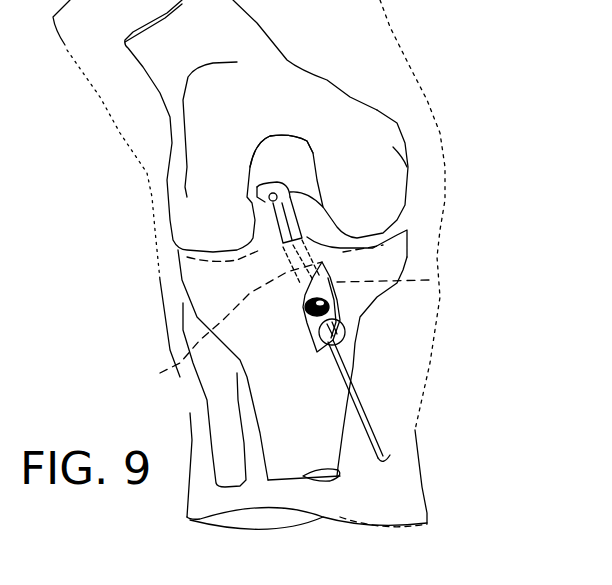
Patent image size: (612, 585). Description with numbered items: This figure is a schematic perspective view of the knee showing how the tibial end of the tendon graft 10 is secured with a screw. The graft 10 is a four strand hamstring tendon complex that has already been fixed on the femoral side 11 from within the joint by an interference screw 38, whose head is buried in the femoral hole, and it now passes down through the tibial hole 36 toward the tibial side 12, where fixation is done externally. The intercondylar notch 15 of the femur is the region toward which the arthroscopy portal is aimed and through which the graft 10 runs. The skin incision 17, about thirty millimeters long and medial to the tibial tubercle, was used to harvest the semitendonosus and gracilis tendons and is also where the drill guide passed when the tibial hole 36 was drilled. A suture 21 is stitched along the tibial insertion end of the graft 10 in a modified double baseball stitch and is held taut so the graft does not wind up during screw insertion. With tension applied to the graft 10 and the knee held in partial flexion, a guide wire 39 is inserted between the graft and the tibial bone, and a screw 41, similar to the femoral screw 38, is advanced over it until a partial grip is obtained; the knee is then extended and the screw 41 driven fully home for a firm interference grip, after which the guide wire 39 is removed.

The graft 10 is at (295, 210).
The femoral side 11 is at (370, 31).
The tibial side 12 is at (447, 493).
The intercondylar notch 15 is at (290, 146).
The incision 17 is at (335, 310).
The suture 21 is at (430, 280).
The tibial hole 36 is at (160, 373).
The screw 38 is at (295, 210).
The guide wire 39 is at (365, 430).
The screw 41 is at (345, 330).